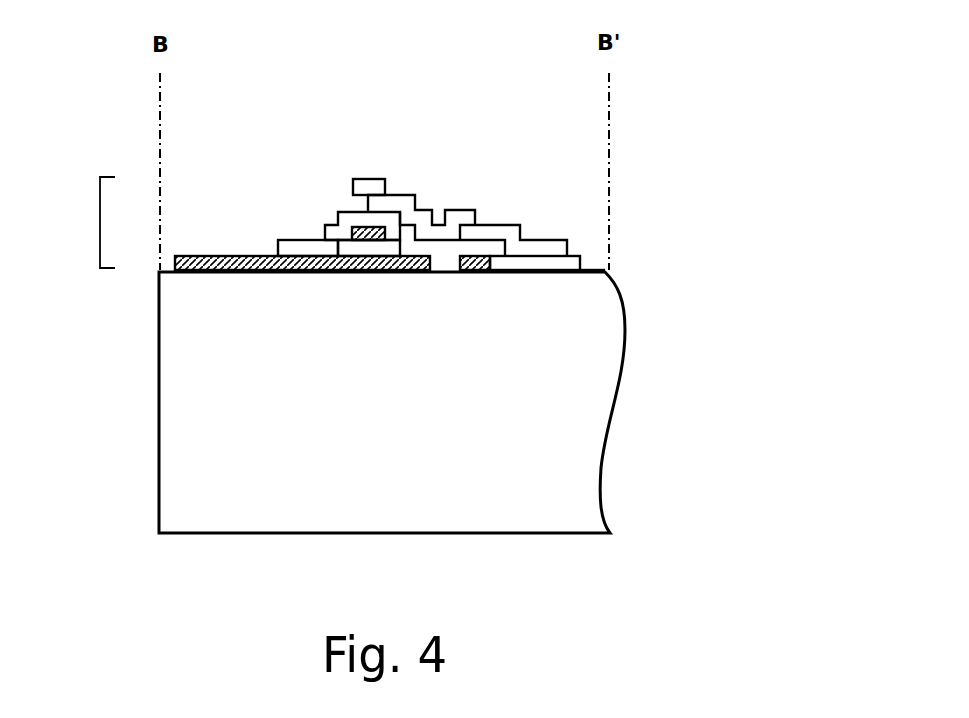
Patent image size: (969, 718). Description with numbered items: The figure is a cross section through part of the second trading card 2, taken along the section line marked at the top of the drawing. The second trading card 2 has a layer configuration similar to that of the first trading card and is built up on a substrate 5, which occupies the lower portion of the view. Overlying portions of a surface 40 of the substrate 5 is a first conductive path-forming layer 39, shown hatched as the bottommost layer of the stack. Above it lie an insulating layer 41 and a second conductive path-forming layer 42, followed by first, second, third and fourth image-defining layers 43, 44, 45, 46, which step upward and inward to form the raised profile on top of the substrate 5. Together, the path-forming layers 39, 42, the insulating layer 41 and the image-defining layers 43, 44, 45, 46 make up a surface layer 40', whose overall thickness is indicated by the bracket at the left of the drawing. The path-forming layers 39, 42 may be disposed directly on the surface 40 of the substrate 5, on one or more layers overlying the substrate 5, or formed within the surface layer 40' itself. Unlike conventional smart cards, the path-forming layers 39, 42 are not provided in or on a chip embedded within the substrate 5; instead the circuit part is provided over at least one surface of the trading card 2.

The second trading card 2 is at (668, 384).
The substrate 5 is at (220, 360).
The first conductive path-forming layer 39 is at (220, 258).
The surface of the substrate 40 is at (626, 210).
The surface layer 40' is at (76, 222).
The insulating layer 41 is at (352, 246).
The second conductive path-forming layer 42 is at (337, 213).
The first image-defining layer 43 is at (522, 250).
The second image-defining layer 44 is at (483, 237).
The third image-defining layer 45 is at (420, 217).
The fourth image-defining layer 46 is at (363, 188).